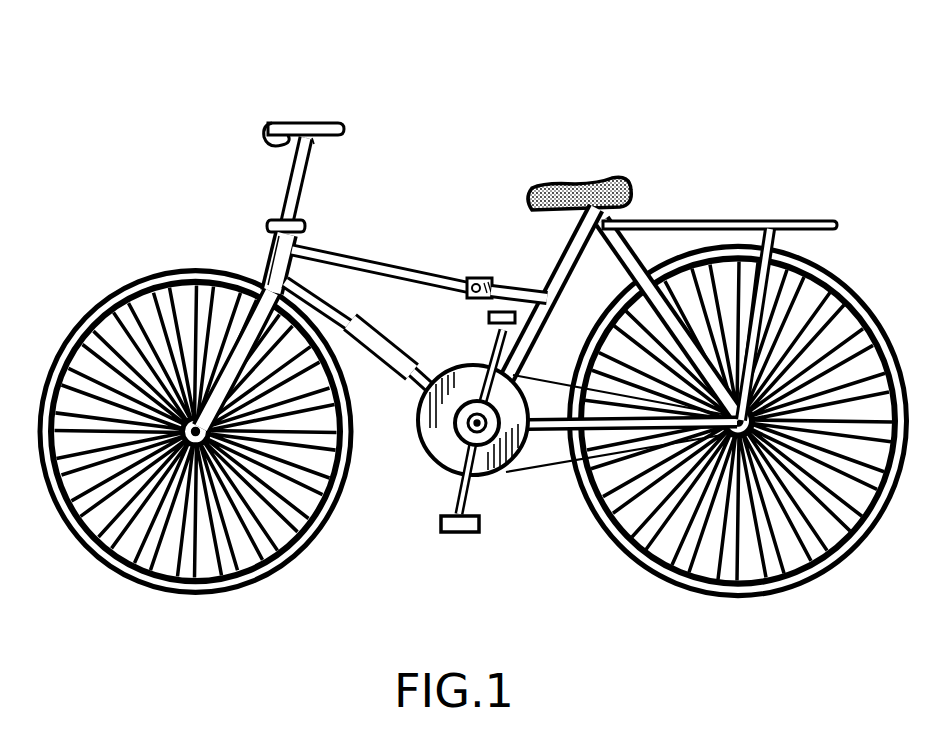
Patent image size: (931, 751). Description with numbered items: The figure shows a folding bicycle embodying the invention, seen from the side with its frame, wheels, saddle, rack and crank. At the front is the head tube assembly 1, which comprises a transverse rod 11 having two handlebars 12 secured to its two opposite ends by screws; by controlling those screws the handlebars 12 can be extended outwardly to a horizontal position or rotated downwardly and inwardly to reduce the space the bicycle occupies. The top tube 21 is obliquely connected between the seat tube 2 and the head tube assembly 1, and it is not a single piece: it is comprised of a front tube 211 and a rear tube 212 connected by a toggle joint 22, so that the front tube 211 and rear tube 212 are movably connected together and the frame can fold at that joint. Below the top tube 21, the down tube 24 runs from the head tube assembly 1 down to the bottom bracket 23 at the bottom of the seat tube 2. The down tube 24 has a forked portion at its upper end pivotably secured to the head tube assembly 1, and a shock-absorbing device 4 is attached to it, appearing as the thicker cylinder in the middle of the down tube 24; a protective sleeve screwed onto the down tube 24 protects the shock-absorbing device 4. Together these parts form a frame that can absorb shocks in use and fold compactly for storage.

The head tube assembly 1 is at (300, 119).
The transverse rod 11 is at (286, 148).
The handlebars 12 is at (305, 122).
The seat tube 2 is at (561, 316).
The top tube 21 is at (419, 219).
The front tube 211 is at (410, 272).
The toggle joint 22 is at (476, 281).
The rear tube 212 is at (514, 289).
The down tube 24 is at (345, 325).
The shock-absorbing device 4 is at (401, 341).
The bottom bracket 23 is at (428, 456).